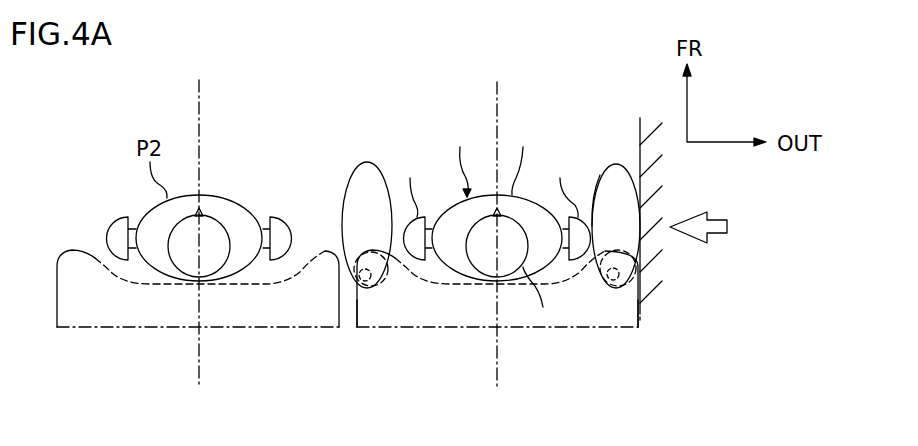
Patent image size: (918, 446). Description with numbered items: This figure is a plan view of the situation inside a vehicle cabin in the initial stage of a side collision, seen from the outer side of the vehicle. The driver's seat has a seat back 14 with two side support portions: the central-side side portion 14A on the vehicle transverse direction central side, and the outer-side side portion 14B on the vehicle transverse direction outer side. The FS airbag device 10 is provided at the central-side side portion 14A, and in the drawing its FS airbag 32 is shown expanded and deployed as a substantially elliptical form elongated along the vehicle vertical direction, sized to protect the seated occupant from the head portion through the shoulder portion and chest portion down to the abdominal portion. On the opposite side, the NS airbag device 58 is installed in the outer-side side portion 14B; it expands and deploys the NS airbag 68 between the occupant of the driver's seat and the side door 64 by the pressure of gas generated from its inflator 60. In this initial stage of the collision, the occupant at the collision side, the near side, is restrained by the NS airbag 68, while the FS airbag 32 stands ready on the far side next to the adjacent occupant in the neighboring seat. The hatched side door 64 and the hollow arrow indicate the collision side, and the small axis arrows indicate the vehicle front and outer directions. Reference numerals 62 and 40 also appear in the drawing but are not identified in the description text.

The FS airbag device 10 is at (380, 142).
The seat back 14 is at (475, 330).
The central-side side portion 14A is at (395, 330).
The outer-side side portion 14B is at (610, 330).
The FS airbag 32 is at (355, 168).
The inflator of far side airbag 40 is at (367, 270).
The NS airbag device 58 is at (607, 150).
The inflator 60 is at (647, 268).
The adjacent seat 62 is at (137, 330).
The side door 64 is at (640, 130).
The NS airbag 68 is at (600, 173).